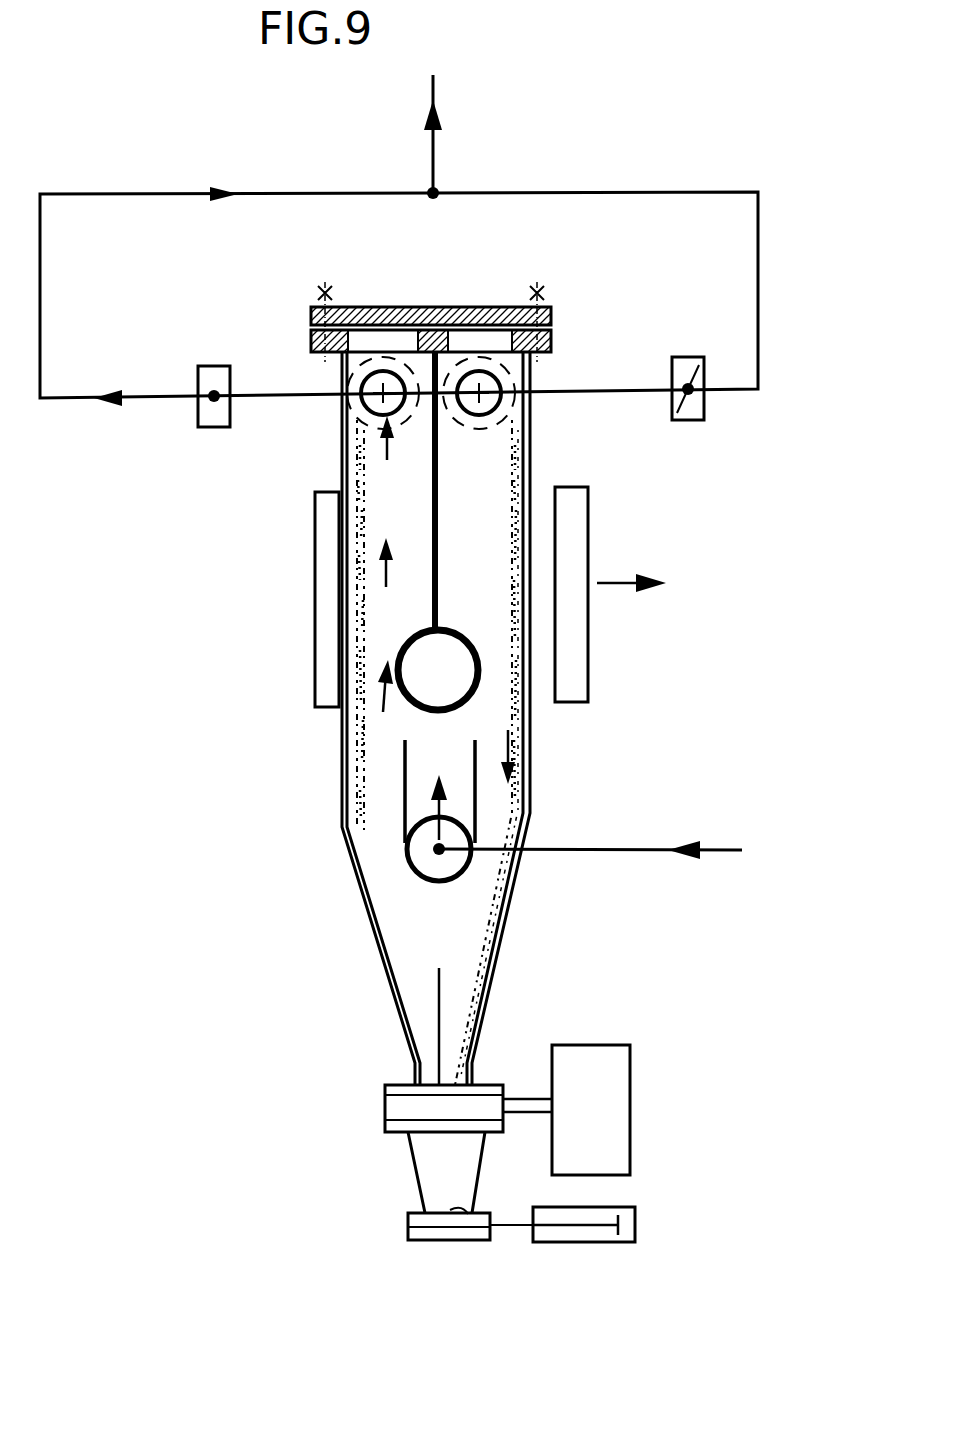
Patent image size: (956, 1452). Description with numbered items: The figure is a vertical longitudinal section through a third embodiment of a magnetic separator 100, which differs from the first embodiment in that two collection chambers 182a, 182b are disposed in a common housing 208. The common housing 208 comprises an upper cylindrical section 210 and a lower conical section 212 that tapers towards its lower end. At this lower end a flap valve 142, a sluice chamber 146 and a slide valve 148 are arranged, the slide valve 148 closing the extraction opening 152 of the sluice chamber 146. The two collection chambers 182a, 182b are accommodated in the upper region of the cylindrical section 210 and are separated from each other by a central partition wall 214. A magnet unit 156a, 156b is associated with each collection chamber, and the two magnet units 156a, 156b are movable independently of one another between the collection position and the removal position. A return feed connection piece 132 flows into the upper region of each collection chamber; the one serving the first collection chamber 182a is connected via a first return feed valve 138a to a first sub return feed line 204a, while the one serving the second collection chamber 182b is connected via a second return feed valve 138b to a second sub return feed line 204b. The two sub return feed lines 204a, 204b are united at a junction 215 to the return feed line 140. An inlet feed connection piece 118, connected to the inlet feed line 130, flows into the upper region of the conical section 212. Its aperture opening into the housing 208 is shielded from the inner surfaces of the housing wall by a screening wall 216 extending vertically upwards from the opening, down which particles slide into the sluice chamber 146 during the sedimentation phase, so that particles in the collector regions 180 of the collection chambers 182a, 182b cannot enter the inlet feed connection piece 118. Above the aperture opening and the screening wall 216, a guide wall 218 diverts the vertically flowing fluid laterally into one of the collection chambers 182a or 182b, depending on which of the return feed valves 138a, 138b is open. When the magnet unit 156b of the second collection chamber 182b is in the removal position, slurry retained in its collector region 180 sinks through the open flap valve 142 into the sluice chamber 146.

The magnetic separator 100 is at (300, 858).
The inlet feed connection piece 118 is at (470, 868).
The inlet feed line 130 is at (656, 850).
The return feed connection piece 132 is at (352, 392).
The first return feed valve 138a is at (203, 372).
The second return feed valve 138b is at (683, 368).
The return feed line 140 is at (433, 95).
The flap valve 142 is at (392, 1142).
The sluice chamber 146 is at (425, 1177).
The slide valve 148 is at (419, 1255).
The extraction opening 152 is at (452, 1208).
The magnet unit 156a is at (325, 562).
The magnet unit 156b is at (572, 553).
The collector region 180 is at (355, 522).
The first collection chamber 182a is at (407, 582).
The second collection chamber 182b is at (477, 598).
The first sub return feed line 204a is at (176, 193).
The second sub return feed line 204b is at (641, 192).
The common housing 208 is at (338, 733).
The upper cylindrical section 210 is at (530, 714).
The lower conical section 212 is at (497, 966).
The central partition wall 214 is at (438, 465).
The junction 215 is at (440, 187).
The screening wall 216 is at (405, 785).
The guide wall 218 is at (480, 651).